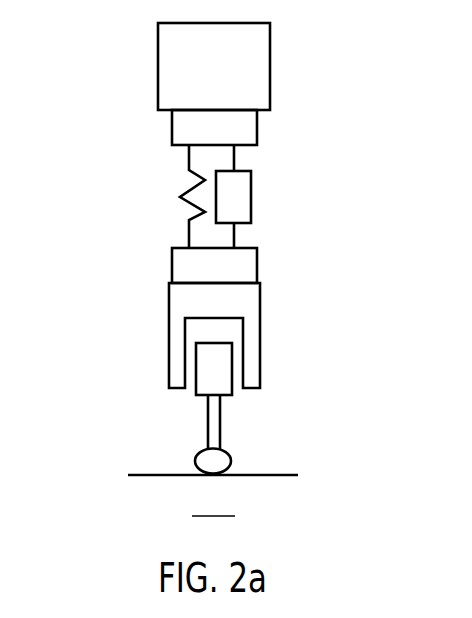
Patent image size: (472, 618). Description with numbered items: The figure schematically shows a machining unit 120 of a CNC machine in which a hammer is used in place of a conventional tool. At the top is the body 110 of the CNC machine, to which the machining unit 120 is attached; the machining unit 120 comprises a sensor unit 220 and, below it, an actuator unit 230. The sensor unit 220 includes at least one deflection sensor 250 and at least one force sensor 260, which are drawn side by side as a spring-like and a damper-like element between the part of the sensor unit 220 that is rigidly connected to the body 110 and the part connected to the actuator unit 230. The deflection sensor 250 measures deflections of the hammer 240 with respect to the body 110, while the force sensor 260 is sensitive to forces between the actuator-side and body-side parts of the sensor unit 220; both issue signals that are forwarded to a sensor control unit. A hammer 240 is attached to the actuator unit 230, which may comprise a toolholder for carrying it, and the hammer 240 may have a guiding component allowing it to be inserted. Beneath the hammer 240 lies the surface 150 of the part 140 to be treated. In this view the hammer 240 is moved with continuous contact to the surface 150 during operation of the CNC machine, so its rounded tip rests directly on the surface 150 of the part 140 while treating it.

The body 110 is at (264, 48).
The machining unit 120 is at (88, 110).
The sensor unit 220 is at (155, 110).
The actuator unit 230 is at (150, 285).
The force sensor 260 is at (253, 182).
The deflection sensor 250 is at (193, 220).
The hammer 240 is at (232, 460).
The surface 150 is at (143, 475).
The part 140 is at (213, 503).